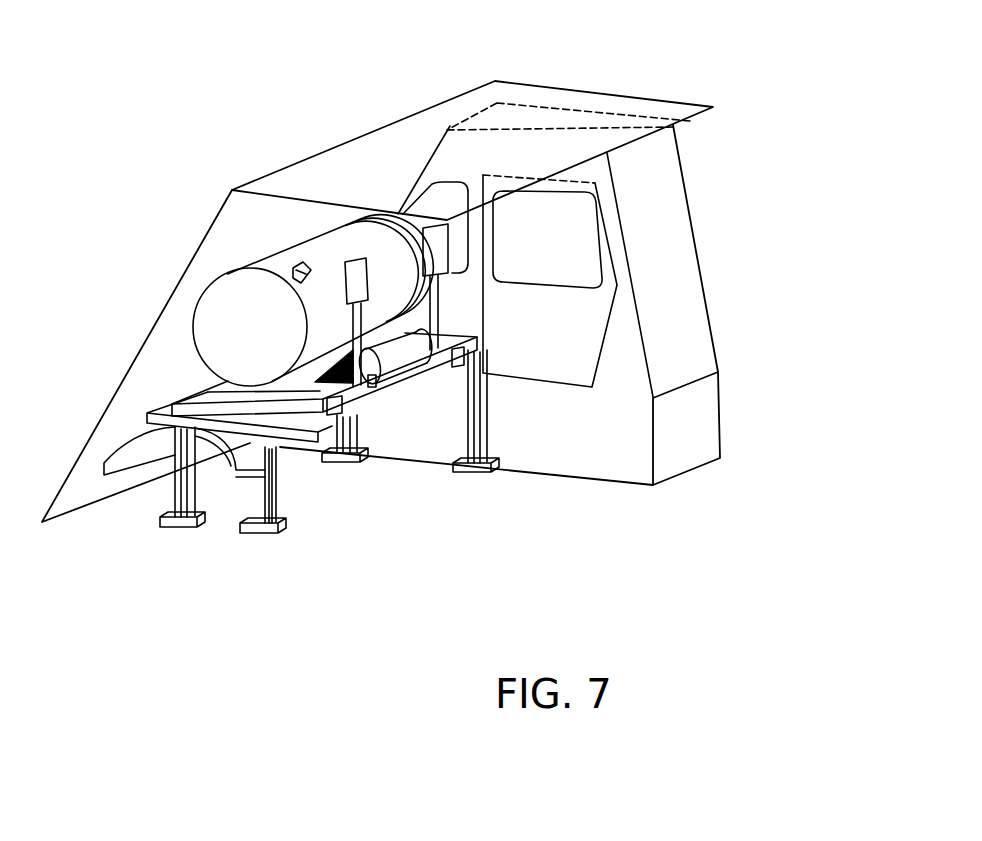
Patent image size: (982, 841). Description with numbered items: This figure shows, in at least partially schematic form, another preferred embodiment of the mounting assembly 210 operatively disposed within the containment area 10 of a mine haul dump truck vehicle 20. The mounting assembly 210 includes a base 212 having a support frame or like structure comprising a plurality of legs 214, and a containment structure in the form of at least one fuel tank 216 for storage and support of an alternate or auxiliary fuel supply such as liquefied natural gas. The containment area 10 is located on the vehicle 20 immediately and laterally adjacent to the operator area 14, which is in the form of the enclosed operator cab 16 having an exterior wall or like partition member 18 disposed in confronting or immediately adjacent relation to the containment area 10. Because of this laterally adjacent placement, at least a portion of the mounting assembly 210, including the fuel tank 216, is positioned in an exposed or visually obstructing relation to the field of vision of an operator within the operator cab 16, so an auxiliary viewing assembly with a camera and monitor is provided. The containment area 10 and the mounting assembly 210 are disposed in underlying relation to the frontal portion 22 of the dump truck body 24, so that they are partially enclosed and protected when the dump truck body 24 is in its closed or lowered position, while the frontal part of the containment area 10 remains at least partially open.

The containment area 10 is at (428, 490).
The operator area 14 is at (624, 294).
The operator cab 16 is at (675, 222).
The exterior wall 18 is at (472, 284).
The vehicle 20 is at (427, 263).
The frontal portion 22 is at (310, 147).
The dump truck body 24 is at (163, 280).
The mounting assembly 210 is at (314, 460).
The base 212 is at (285, 452).
The legs 214 is at (181, 485).
The fuel tank 216 is at (233, 277).